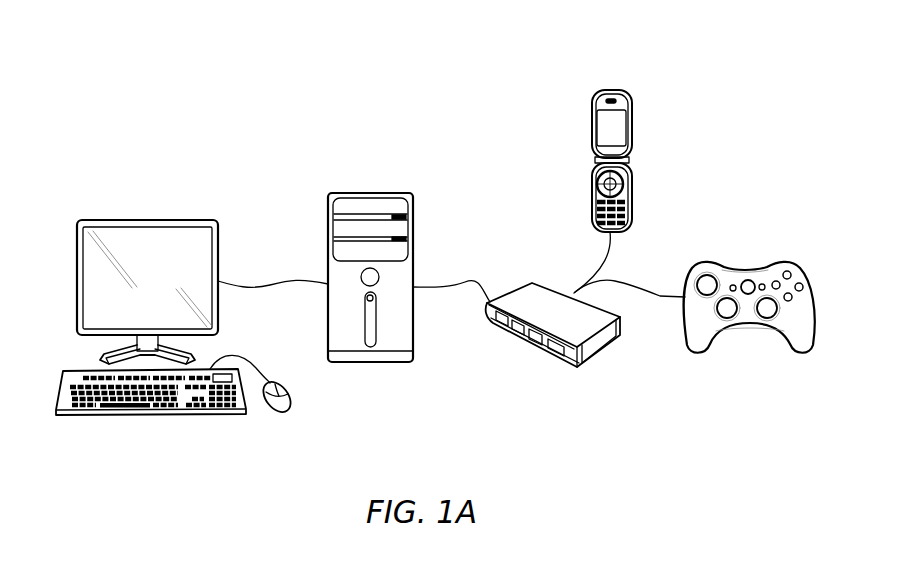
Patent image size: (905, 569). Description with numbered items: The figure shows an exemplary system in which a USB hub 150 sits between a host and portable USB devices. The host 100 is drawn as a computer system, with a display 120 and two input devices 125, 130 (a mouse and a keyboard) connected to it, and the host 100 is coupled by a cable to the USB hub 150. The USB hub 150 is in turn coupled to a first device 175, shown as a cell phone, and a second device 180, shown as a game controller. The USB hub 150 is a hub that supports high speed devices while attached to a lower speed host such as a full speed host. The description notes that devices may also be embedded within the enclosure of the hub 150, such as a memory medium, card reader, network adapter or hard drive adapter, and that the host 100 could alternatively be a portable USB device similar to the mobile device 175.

The host 100 is at (382, 193).
The display 120 is at (133, 220).
The input device 125 is at (284, 415).
The input device 130 is at (168, 415).
The USB hub 150 is at (580, 370).
The first device 175 is at (610, 90).
The second device 180 is at (750, 270).